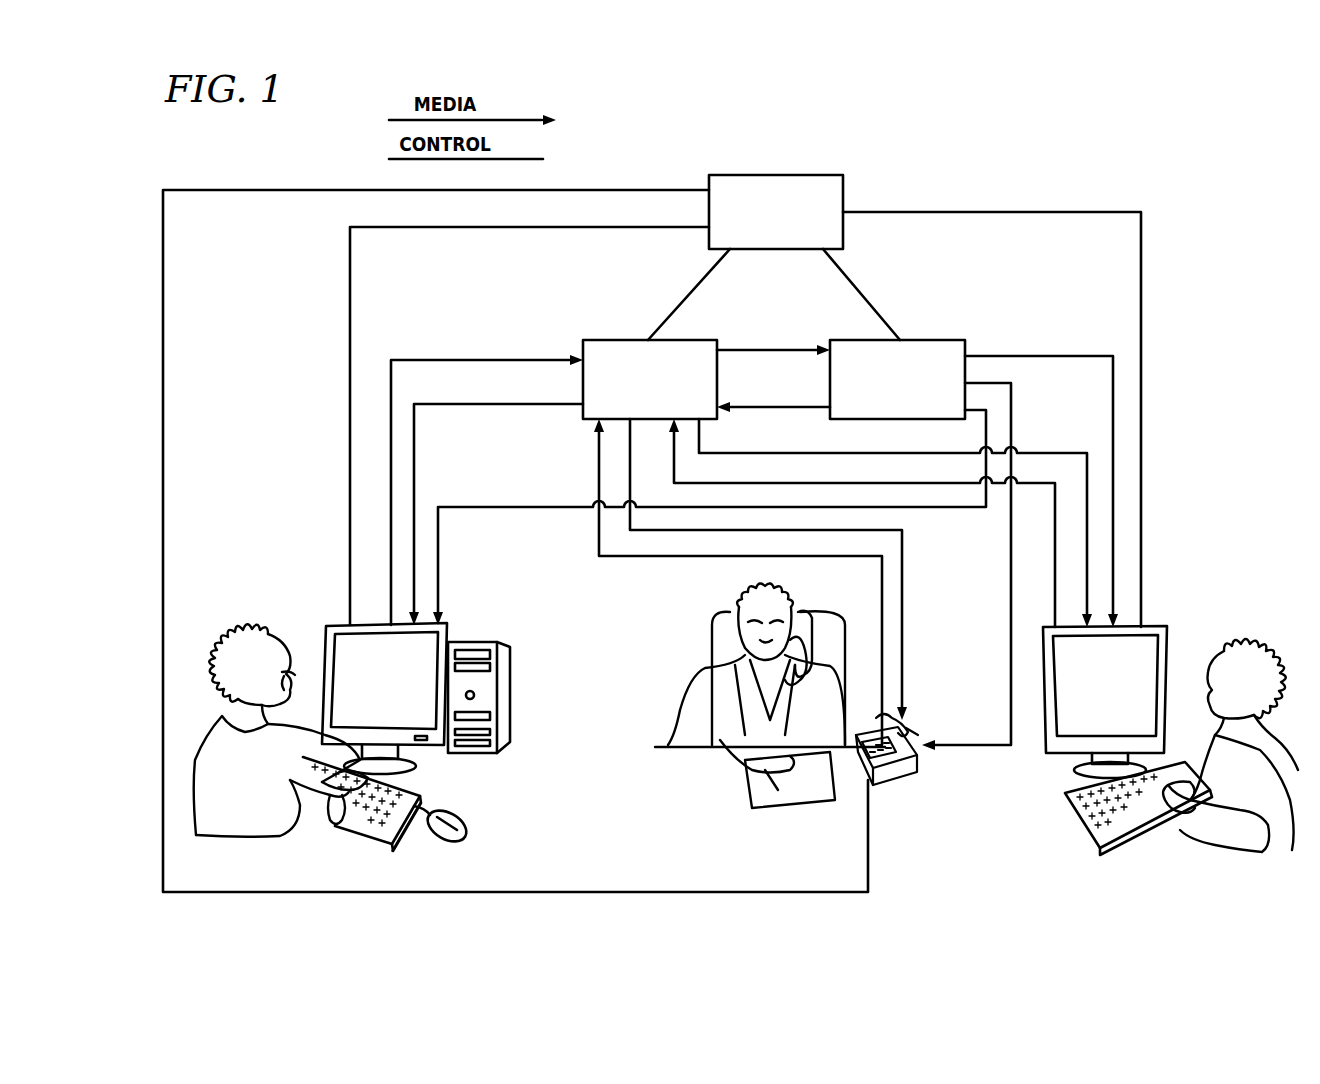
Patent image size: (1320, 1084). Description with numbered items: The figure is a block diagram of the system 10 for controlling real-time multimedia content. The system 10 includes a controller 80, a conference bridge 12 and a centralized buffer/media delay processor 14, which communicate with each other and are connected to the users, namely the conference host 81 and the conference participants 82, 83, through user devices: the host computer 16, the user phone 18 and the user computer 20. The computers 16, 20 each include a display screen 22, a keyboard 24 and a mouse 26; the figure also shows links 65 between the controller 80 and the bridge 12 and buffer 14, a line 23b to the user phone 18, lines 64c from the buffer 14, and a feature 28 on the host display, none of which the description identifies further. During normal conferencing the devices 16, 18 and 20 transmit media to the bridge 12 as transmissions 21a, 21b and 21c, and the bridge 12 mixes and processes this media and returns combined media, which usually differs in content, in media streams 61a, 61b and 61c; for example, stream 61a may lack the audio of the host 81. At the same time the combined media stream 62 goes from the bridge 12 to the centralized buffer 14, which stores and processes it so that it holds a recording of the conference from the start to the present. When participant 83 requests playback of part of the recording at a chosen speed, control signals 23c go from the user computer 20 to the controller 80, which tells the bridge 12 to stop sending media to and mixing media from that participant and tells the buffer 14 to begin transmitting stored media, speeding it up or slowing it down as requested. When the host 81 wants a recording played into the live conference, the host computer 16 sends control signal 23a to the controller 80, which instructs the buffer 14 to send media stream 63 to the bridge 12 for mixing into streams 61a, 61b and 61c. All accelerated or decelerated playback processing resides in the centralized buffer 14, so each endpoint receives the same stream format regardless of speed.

The system 10 is at (938, 172).
The controller 80 is at (767, 175).
The conference bridge 12 is at (595, 340).
The centralized buffer/media delay processor 14 is at (946, 340).
The controller links 65 is at (693, 290).
The combined media stream 62 is at (772, 346).
The media stream 63 is at (772, 402).
The control signal 23a is at (350, 405).
The control line to user 1 phone 23b is at (163, 353).
The control signals 23c is at (1141, 415).
The media transmission from host computer 21a is at (520, 355).
The media transmission from user phone 21b is at (596, 455).
The media transmission from user computer 21c is at (677, 466).
The media stream to host computer 61a is at (417, 582).
The media stream to user phone 61b is at (905, 662).
The media stream to user computer 61c is at (1060, 451).
The buffered media outputs 64c is at (970, 370).
The display screen 22 is at (338, 640).
The monitor indicator 28 is at (427, 740).
The host computer 16 is at (510, 705).
The keyboard 24 is at (385, 830).
The mouse 26 is at (466, 820).
The conference host 81 is at (270, 632).
The conference participant 82 is at (700, 668).
The user phone 18 is at (905, 780).
The user computer 20 is at (1164, 632).
The conference participant 83 is at (1240, 640).